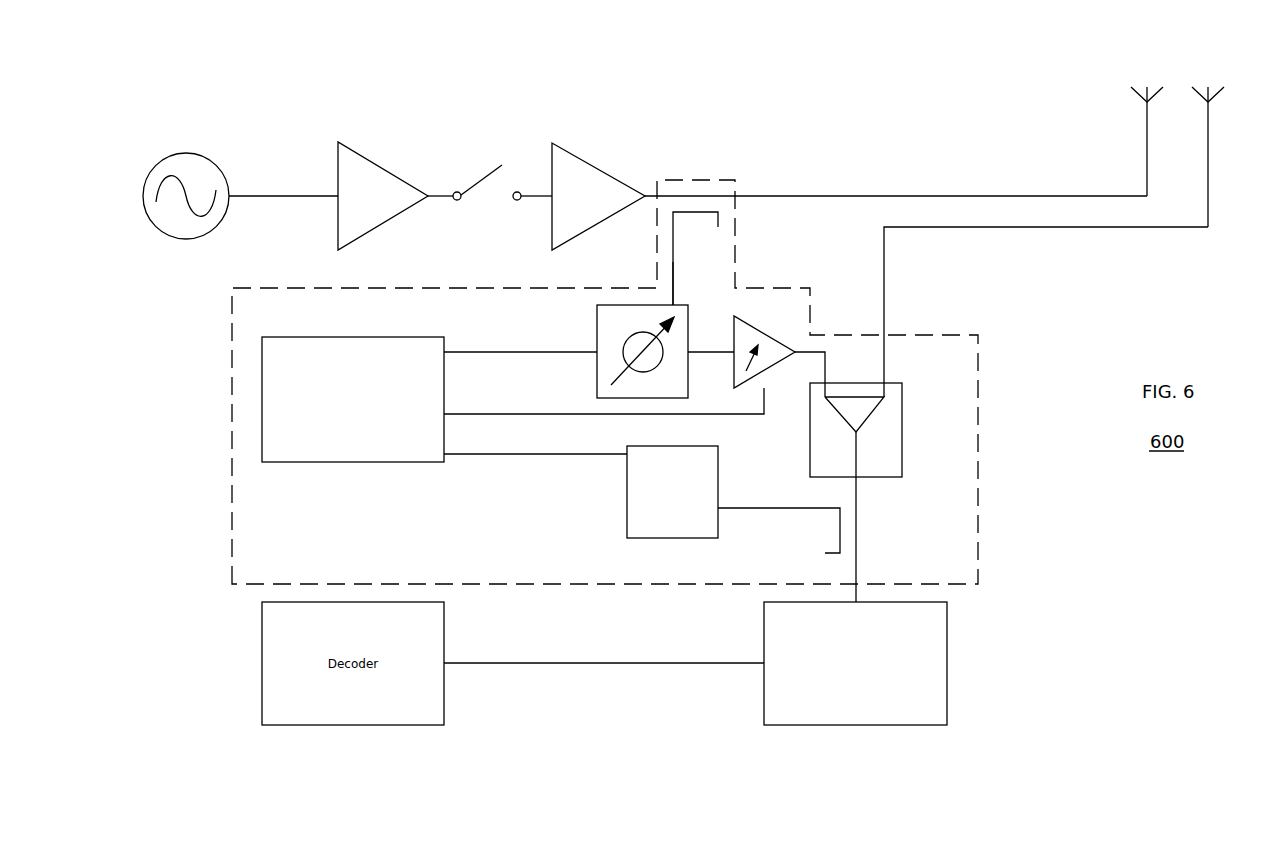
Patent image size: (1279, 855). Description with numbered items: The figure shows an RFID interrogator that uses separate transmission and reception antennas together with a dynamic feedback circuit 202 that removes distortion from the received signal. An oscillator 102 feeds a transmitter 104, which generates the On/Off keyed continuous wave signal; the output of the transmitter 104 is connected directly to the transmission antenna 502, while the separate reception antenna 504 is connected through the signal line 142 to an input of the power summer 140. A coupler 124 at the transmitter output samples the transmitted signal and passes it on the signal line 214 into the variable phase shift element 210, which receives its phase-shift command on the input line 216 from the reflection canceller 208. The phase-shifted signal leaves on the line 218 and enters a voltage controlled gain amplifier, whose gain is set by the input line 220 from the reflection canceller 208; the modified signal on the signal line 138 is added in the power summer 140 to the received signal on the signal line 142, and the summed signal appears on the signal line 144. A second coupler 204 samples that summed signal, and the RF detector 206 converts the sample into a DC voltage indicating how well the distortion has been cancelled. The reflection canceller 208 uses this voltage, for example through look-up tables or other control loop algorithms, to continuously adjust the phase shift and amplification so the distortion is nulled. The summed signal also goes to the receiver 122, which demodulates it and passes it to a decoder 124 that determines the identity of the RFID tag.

The oscillator 102 is at (193, 152).
The transmitter 104 is at (540, 88).
The receiver 122 is at (947, 625).
The coupler 124 is at (688, 214).
The signal line 138 is at (752, 322).
The power summer 140 is at (810, 444).
The signal line 142 is at (886, 362).
The signal line 144 is at (857, 490).
The dynamic feedback circuit 202 is at (232, 398).
The second coupler 204 is at (840, 526).
The RF detector 206 is at (627, 508).
The reflection canceller 208 is at (308, 462).
The variable phase shift element 210 is at (597, 333).
The signal line 214 is at (673, 262).
The input line 216 is at (475, 352).
The line 218 is at (705, 352).
The input line 220 is at (533, 415).
The antenna 502 is at (1147, 72).
The antenna 504 is at (1208, 72).